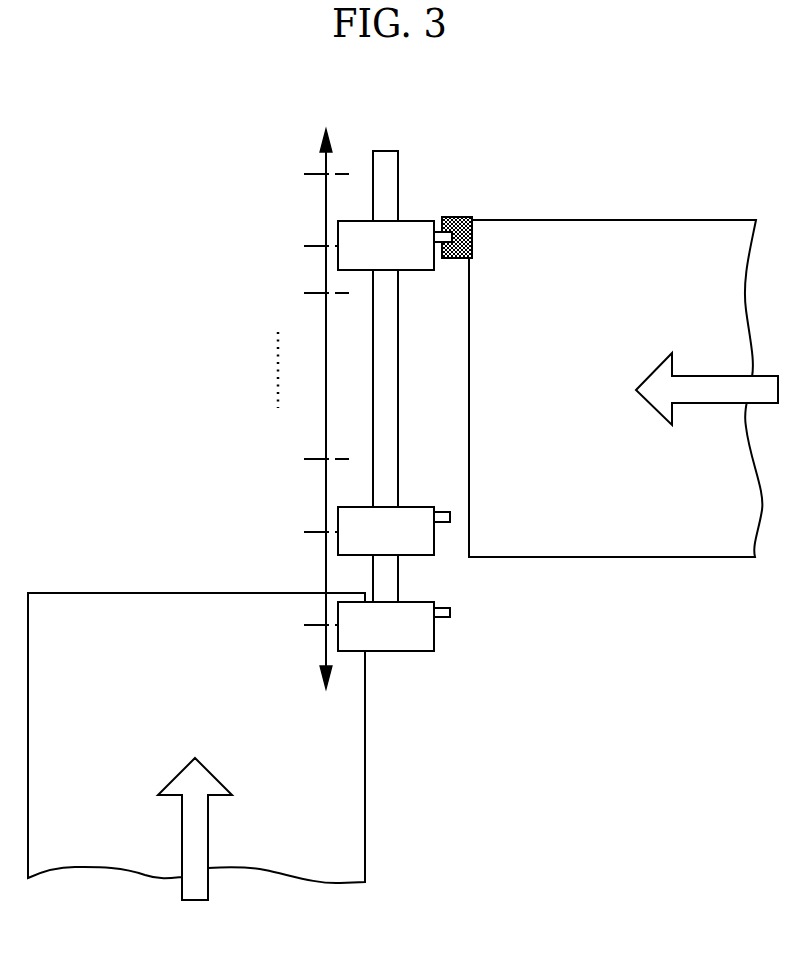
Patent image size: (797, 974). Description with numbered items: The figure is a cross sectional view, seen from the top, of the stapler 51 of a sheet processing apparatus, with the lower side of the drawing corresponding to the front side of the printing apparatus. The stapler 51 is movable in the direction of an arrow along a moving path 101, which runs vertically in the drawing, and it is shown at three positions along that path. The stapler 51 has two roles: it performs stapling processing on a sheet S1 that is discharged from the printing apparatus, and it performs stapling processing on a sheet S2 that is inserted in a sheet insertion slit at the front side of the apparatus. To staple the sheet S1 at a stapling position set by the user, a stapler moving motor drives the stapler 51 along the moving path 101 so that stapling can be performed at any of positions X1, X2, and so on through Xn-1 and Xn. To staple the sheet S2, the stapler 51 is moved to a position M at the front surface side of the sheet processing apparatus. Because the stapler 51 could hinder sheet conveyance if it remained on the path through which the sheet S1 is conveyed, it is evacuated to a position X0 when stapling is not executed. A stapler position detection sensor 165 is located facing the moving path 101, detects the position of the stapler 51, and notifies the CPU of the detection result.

The moving path 101 is at (384, 150).
The stapler position detection sensor 165 is at (451, 217).
The stapler 51 is at (414, 271).
The sheet S1 is at (645, 220).
The sheet S2 is at (365, 746).
The position X0 is at (308, 174).
The position X1 is at (308, 246).
The position X2 is at (308, 293).
The position Xn-1 is at (298, 459).
The position Xn is at (308, 532).
The position M is at (313, 626).